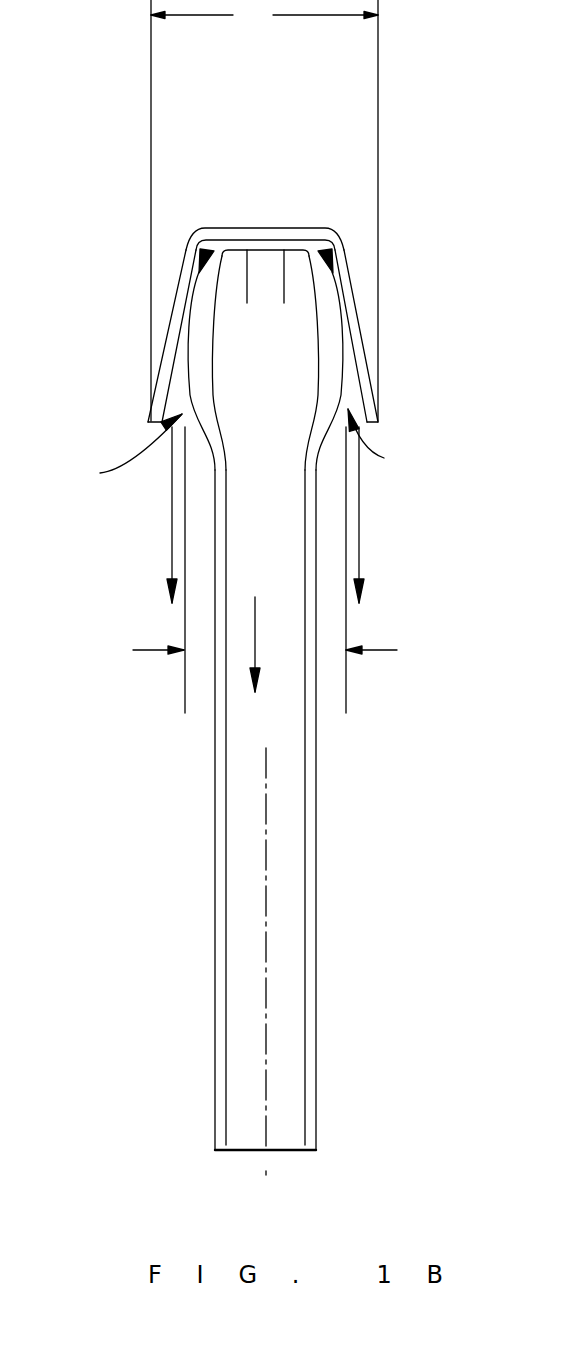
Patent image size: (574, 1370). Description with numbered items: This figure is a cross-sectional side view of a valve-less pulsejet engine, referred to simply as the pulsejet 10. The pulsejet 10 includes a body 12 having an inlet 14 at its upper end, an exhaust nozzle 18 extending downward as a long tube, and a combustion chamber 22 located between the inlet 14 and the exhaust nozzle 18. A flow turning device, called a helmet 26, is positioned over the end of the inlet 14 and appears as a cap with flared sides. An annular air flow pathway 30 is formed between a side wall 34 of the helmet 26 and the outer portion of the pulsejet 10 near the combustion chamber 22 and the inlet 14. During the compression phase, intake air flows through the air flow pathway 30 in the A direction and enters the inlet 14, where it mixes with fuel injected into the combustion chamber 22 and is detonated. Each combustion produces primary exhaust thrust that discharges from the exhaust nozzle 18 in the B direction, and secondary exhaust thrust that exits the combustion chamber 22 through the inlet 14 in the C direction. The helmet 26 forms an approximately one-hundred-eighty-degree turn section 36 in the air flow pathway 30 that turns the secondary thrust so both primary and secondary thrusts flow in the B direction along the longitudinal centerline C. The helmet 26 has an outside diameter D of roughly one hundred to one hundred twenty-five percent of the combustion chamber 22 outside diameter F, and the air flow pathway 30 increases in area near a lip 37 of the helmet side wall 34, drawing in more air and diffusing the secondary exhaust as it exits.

The pulsejet 10 is at (108, 185).
The body 12 is at (318, 753).
The inlet 14 is at (266, 265).
The exhaust nozzle 18 is at (238, 867).
The combustion chamber 22 is at (263, 392).
The helmet 26 is at (230, 236).
The air flow pathway 30 is at (183, 394).
The side wall 34 is at (176, 328).
The turn section 36 is at (198, 241).
The lip 37 is at (149, 424).